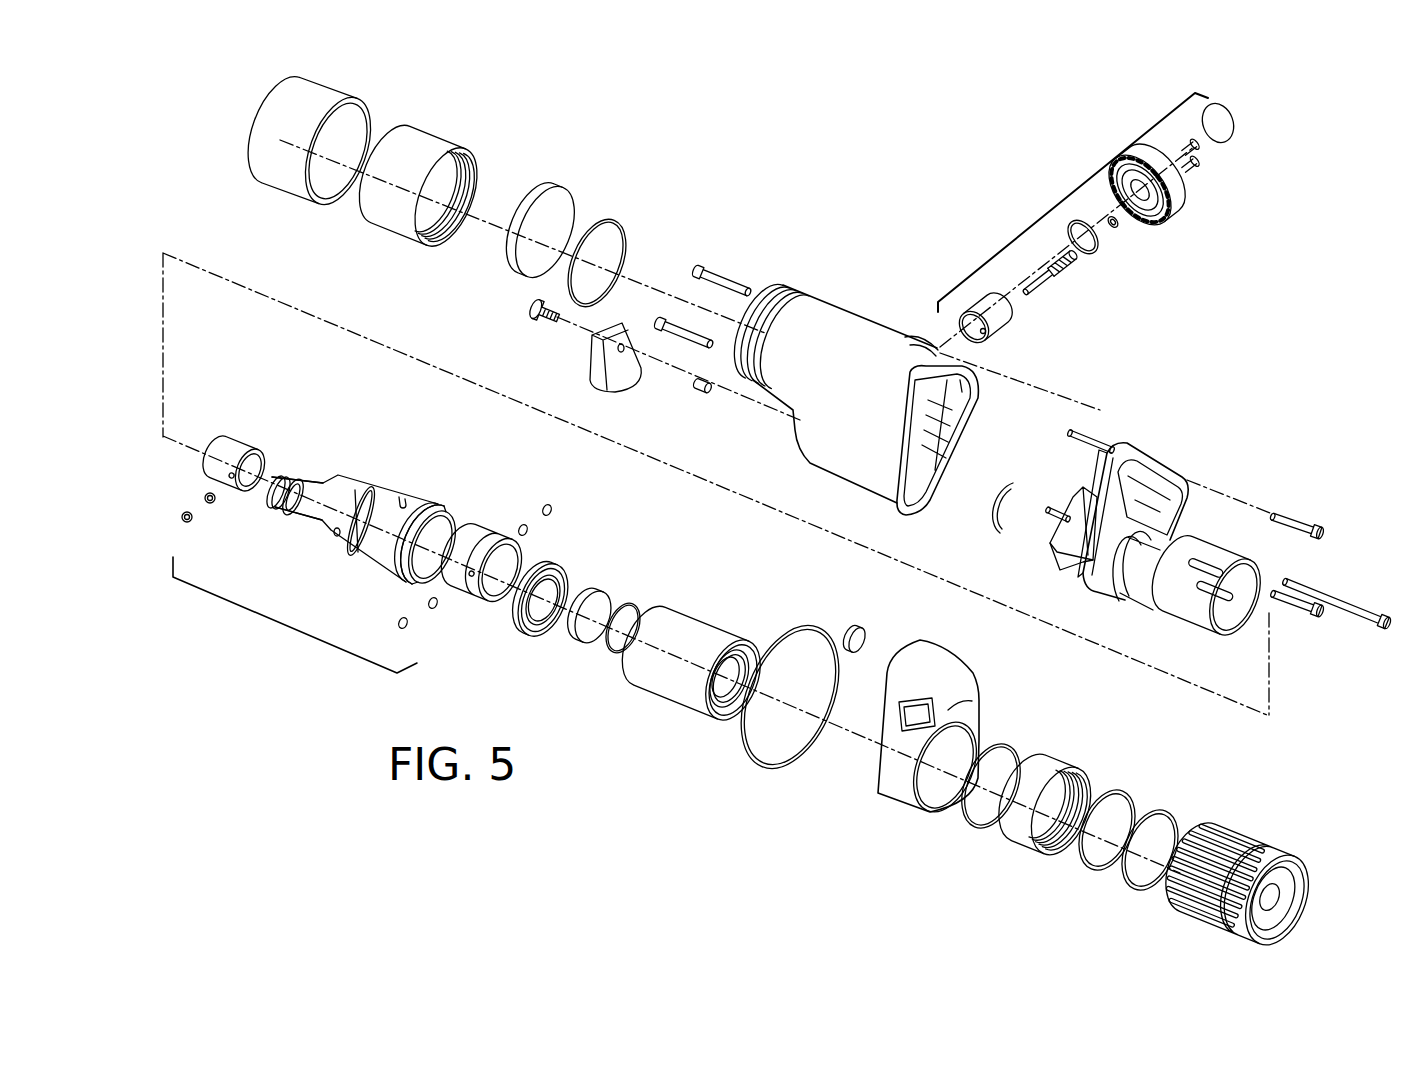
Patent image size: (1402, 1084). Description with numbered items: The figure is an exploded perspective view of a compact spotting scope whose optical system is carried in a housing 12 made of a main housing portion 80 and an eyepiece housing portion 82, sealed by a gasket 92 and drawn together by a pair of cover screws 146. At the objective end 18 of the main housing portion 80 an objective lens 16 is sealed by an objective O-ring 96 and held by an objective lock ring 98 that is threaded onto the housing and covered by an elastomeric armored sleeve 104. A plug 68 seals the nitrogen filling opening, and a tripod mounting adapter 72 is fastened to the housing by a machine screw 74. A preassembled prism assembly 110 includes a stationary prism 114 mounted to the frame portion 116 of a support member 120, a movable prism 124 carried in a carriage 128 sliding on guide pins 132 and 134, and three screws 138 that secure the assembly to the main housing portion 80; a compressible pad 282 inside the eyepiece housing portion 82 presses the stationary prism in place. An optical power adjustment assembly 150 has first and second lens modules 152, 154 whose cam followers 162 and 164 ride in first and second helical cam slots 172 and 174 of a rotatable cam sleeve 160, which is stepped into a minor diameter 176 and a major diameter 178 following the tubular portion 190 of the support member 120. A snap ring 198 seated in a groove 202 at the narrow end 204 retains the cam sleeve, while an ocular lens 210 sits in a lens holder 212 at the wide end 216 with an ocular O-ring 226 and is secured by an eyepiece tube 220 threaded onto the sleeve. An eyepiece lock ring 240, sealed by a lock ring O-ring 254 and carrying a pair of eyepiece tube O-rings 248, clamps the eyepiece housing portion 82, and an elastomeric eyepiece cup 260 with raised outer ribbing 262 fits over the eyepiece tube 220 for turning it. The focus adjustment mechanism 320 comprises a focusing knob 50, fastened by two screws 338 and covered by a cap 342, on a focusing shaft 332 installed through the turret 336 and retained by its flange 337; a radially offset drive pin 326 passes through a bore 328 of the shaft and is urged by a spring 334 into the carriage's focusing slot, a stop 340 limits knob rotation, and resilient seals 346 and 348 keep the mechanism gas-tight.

The housing 12 is at (908, 629).
The objective lens 16 is at (543, 188).
The objective end 18 is at (810, 274).
The focusing knob 50 is at (1180, 213).
The plug 68 is at (702, 388).
The tripod mounting adapter 72 is at (597, 367).
The machine screw 74 is at (525, 312).
The main housing portion 80 is at (868, 333).
The eyepiece housing portion 82 is at (947, 660).
The gasket 92 is at (770, 770).
The objective O-ring 96 is at (613, 220).
The objective lock ring 98 is at (432, 143).
The armored sleeve 104 is at (313, 88).
The prism assembly 110 is at (1197, 414).
The stationary prism 114 is at (1155, 498).
The frame portion 116 is at (1128, 457).
The support member 120 is at (1133, 593).
The movable prism 124 is at (1088, 490).
The carriage 128 is at (1070, 566).
The guide pin 132 is at (1050, 510).
The guide pin 134 is at (1097, 425).
The screws 138 is at (1297, 607).
The cover screws 146 is at (716, 263).
The optical power adjustment assembly 150 is at (268, 623).
The first lens module 152 is at (247, 447).
The second lens module 154 is at (483, 533).
The cam sleeve 160 is at (373, 470).
The cam follower 162 is at (187, 513).
The cam followers 164 is at (573, 513).
The first helical cam slot 172 is at (300, 497).
The second helical cam slot 174 is at (353, 527).
The minor diameter 176 is at (303, 517).
The major diameter 178 is at (383, 553).
The tubular portion 190 is at (1200, 610).
The snap ring 198 is at (990, 540).
The groove 202 is at (273, 500).
The narrow end 204 is at (273, 488).
The ocular lens 210 is at (580, 640).
The lens holder 212 is at (533, 633).
The wide end 216 is at (430, 517).
The eyepiece tube 220 is at (667, 700).
The ocular O-ring 226 is at (638, 605).
The eyepiece lock ring 240 is at (1060, 760).
The eyepiece tube O-rings 248 is at (1160, 807).
The lock ring O-ring 254 is at (1003, 737).
The eyepiece cup 260 is at (1251, 824).
The raised outer ribbing 262 is at (1195, 895).
The compressible pad 282 is at (847, 630).
The focus adjustment mechanism 320 is at (1093, 172).
The drive pin 326 is at (1050, 280).
The bore 328 is at (983, 337).
The focusing shaft 332 is at (997, 323).
The spring 334 is at (1080, 260).
The turret 336 is at (912, 338).
The flange 337 is at (975, 345).
The screws 338 is at (1200, 168).
The stop 340 is at (1147, 220).
The cap 342 is at (1234, 127).
The resilient seal 346 is at (1107, 240).
The resilient seal 348 is at (1127, 223).